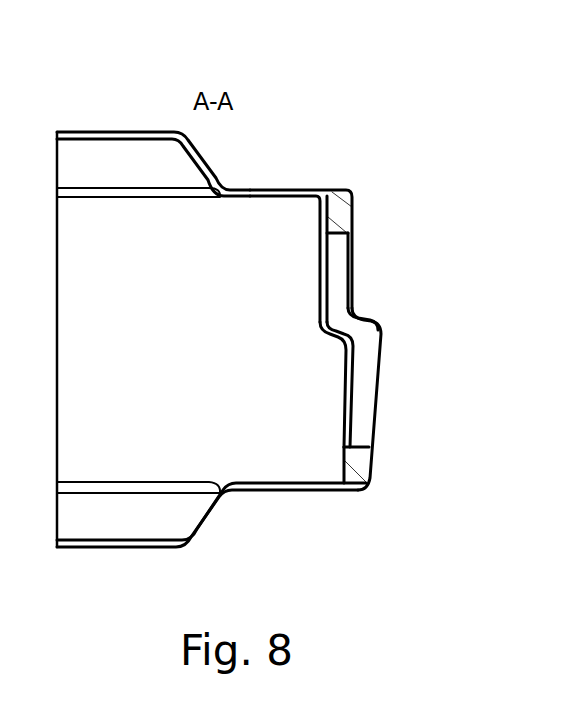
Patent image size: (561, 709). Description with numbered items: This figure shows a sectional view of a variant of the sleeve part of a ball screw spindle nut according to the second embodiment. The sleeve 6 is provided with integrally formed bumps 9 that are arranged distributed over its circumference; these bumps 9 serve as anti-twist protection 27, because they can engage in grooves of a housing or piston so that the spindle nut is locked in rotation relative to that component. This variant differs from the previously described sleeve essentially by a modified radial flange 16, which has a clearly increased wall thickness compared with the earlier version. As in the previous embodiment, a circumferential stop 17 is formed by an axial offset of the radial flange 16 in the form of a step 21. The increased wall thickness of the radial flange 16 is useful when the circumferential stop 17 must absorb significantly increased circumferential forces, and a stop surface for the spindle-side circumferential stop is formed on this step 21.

The bumps 9 is at (153, 267).
The anti-twist protection 27 is at (95, 163).
The sleeve 6 is at (260, 192).
The radial flange 16 is at (342, 260).
The circumferential stop 17 is at (263, 409).
The step 21 is at (364, 320).